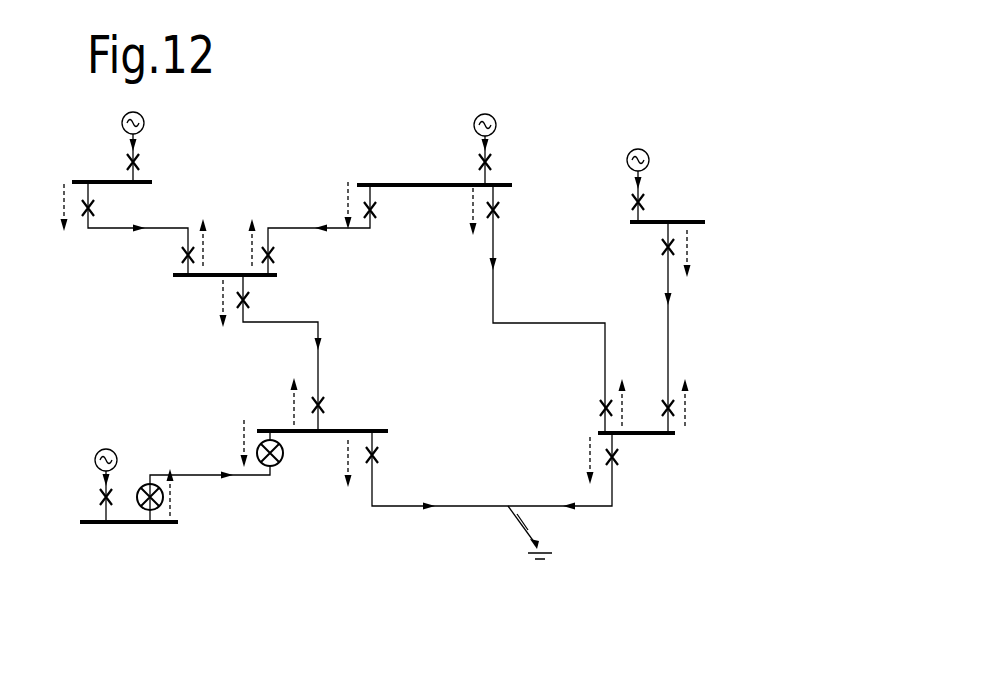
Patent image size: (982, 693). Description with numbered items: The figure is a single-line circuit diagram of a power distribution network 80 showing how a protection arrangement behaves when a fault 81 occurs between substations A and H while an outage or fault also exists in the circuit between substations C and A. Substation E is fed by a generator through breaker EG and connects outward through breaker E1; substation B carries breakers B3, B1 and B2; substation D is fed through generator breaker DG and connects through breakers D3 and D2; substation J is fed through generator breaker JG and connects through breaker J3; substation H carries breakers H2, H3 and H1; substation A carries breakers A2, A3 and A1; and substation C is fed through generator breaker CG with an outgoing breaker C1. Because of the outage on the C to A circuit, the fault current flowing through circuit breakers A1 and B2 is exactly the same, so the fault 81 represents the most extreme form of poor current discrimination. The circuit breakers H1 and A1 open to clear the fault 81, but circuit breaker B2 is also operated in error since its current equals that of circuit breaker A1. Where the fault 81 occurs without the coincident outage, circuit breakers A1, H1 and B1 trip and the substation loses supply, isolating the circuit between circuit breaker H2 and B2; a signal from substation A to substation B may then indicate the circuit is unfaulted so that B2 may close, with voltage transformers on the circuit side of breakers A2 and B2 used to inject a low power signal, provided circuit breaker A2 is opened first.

The power distribution network 80 is at (770, 263).
The fault 81 is at (553, 554).
The generator breaker E EG is at (114, 147).
The breaker E1 is at (125, 228).
The circuit breaker B1 is at (310, 230).
The circuit breaker B2 is at (293, 353).
The breaker B3 is at (176, 244).
The generator breaker D DG is at (467, 149).
The breaker D2 is at (538, 309).
The breaker D3 is at (380, 205).
The generator breaker J JG is at (653, 185).
The breaker J3 is at (659, 327).
The circuit breaker H1 is at (557, 470).
The circuit breaker H2 is at (594, 404).
The breaker H3 is at (693, 404).
The circuit breaker A1 is at (424, 463).
The circuit breaker A2 is at (327, 401).
The breaker A3 is at (233, 471).
The generator breaker C CG is at (86, 485).
The breaker C1 is at (173, 493).